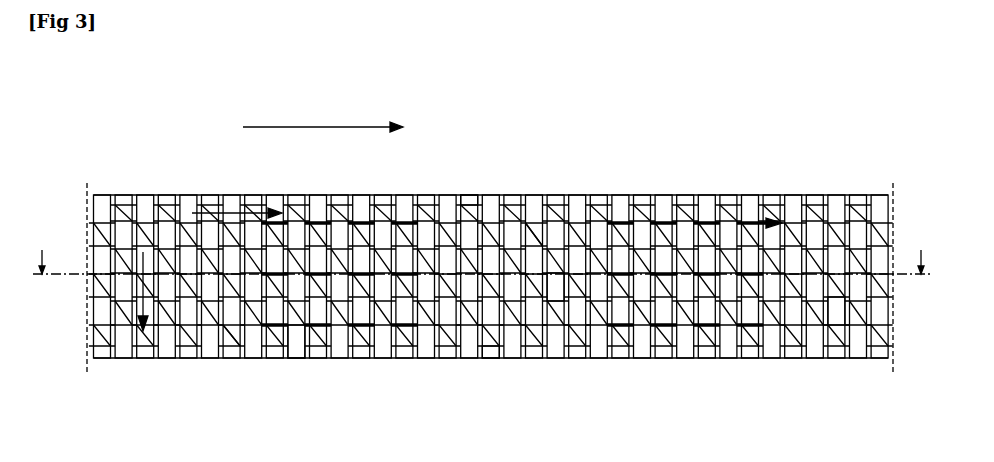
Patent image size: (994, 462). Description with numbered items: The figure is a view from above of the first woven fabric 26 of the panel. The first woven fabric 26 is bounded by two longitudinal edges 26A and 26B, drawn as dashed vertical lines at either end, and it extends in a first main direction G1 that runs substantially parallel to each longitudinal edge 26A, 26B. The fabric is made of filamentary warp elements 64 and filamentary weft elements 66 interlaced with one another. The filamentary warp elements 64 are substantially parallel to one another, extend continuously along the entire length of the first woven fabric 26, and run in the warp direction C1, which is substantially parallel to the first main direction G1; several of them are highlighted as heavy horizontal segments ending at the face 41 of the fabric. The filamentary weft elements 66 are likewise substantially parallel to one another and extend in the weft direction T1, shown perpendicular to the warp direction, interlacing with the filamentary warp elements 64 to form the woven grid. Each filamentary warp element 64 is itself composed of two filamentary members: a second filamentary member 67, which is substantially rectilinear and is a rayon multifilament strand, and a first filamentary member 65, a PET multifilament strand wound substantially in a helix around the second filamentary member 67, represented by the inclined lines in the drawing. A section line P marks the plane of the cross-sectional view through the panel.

The first woven fabric 26 is at (652, 150).
The longitudinal edge 26A is at (489, 197).
The longitudinal edge 26B is at (597, 358).
The face 41 is at (780, 219).
The filamentary warp element 64 is at (345, 224).
The first filamentary member 65 is at (476, 203).
The filamentary weft element 66 is at (297, 347).
The second filamentary member 67 is at (528, 212).
The first main direction G1 is at (323, 115).
The warp direction C1 is at (232, 195).
The weft direction T1 is at (147, 319).
The section line P-P' P is at (481, 251).